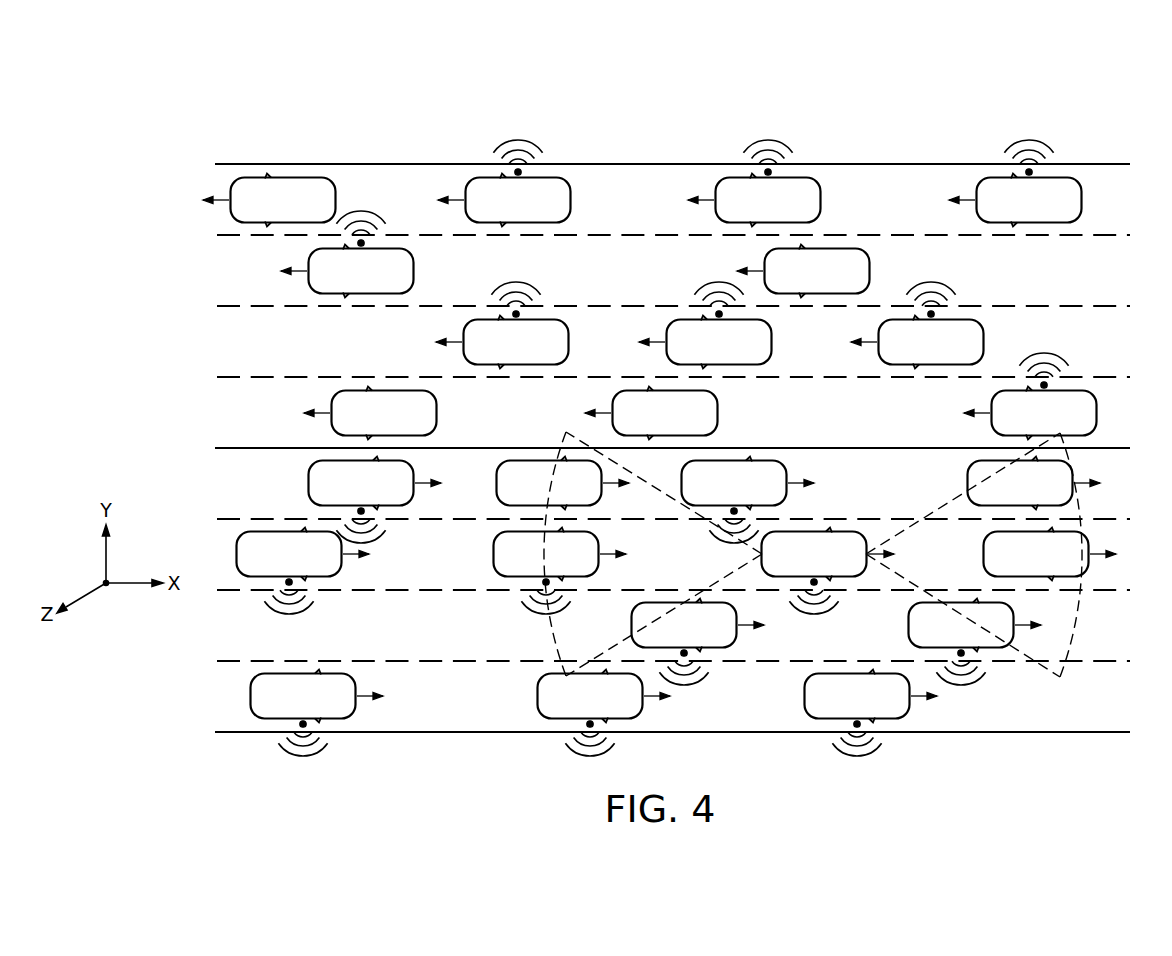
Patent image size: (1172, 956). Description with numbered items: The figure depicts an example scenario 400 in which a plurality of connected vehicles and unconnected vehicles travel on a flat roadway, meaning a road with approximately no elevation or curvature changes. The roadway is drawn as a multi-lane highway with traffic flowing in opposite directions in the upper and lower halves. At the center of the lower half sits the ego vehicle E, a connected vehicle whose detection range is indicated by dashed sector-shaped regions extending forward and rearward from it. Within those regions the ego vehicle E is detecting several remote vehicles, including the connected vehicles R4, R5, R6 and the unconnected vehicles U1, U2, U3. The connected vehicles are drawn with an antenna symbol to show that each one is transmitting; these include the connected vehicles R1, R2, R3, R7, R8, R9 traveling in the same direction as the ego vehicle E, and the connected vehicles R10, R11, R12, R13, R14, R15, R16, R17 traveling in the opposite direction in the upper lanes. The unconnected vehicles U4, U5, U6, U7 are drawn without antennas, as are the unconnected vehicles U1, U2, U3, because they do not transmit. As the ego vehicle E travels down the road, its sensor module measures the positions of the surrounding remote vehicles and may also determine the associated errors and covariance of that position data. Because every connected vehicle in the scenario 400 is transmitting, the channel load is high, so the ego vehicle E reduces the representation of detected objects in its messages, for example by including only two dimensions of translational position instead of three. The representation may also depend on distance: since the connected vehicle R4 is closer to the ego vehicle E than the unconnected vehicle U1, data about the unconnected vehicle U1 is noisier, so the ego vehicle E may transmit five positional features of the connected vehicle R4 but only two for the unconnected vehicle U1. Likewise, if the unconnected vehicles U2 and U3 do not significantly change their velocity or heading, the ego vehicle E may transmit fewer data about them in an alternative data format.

The example scenario 400 is at (173, 137).
The ego vehicle E is at (828, 571).
The connected vehicle R1 is at (871, 713).
The connected vehicle R2 is at (604, 713).
The connected vehicle R3 is at (317, 713).
The connected vehicle R4 is at (975, 642).
The connected vehicle R5 is at (698, 642).
The connected vehicle R6 is at (560, 571).
The connected vehicle R7 is at (303, 571).
The connected vehicle R8 is at (748, 500).
The connected vehicle R9 is at (375, 500).
The connected vehicle R10 is at (502, 325).
The connected vehicle R11 is at (705, 325).
The connected vehicle R12 is at (917, 325).
The connected vehicle R13 is at (1030, 396).
The connected vehicle R14 is at (347, 254).
The connected vehicle R15 is at (1015, 183).
The connected vehicle R16 is at (754, 183).
The connected vehicle R17 is at (504, 183).
The unconnected vehicle U1 is at (1050, 554).
The unconnected vehicle U2 is at (1034, 483).
The unconnected vehicle U3 is at (563, 483).
The unconnected vehicle U4 is at (370, 413).
The unconnected vehicle U5 is at (651, 413).
The unconnected vehicle U6 is at (269, 200).
The unconnected vehicle U7 is at (803, 271).